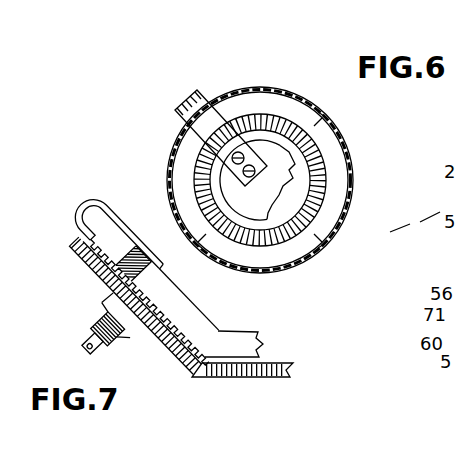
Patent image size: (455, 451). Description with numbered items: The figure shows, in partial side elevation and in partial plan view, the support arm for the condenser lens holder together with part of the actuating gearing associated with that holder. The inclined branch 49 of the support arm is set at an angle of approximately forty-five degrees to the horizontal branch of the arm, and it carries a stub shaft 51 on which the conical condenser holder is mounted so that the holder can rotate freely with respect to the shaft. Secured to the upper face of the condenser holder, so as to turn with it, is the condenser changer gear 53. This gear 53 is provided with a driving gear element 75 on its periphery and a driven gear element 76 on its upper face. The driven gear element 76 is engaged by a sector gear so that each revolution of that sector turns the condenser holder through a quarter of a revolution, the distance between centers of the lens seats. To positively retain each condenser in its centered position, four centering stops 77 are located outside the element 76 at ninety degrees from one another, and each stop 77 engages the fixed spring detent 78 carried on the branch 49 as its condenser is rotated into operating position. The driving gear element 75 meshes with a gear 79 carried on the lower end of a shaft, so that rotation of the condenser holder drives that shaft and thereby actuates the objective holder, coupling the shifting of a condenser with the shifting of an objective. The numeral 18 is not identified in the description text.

In FIG. 6, the lever 18 is at (195, 92).
In FIG. 6, the branch 49 is at (283, 184).
In FIG. 7, the branch 49 is at (170, 300).
In FIG. 7, the stub shaft 51 is at (104, 308).
In FIG. 6, the condenser changer gear 53 is at (249, 78).
In FIG. 7, the condenser changer gear 53 is at (70, 265).
In FIG. 6, the driving gear element 75 is at (295, 89).
In FIG. 7, the driving gear element 75 is at (163, 337).
In FIG. 6, the driven gear element 76 is at (320, 163).
In FIG. 7, the driven gear element 76 is at (187, 348).
In FIG. 6, the centering stop 77 is at (314, 125).
In FIG. 7, the spring detent 78 is at (78, 208).
In FIG. 7, the gear 79 is at (248, 371).